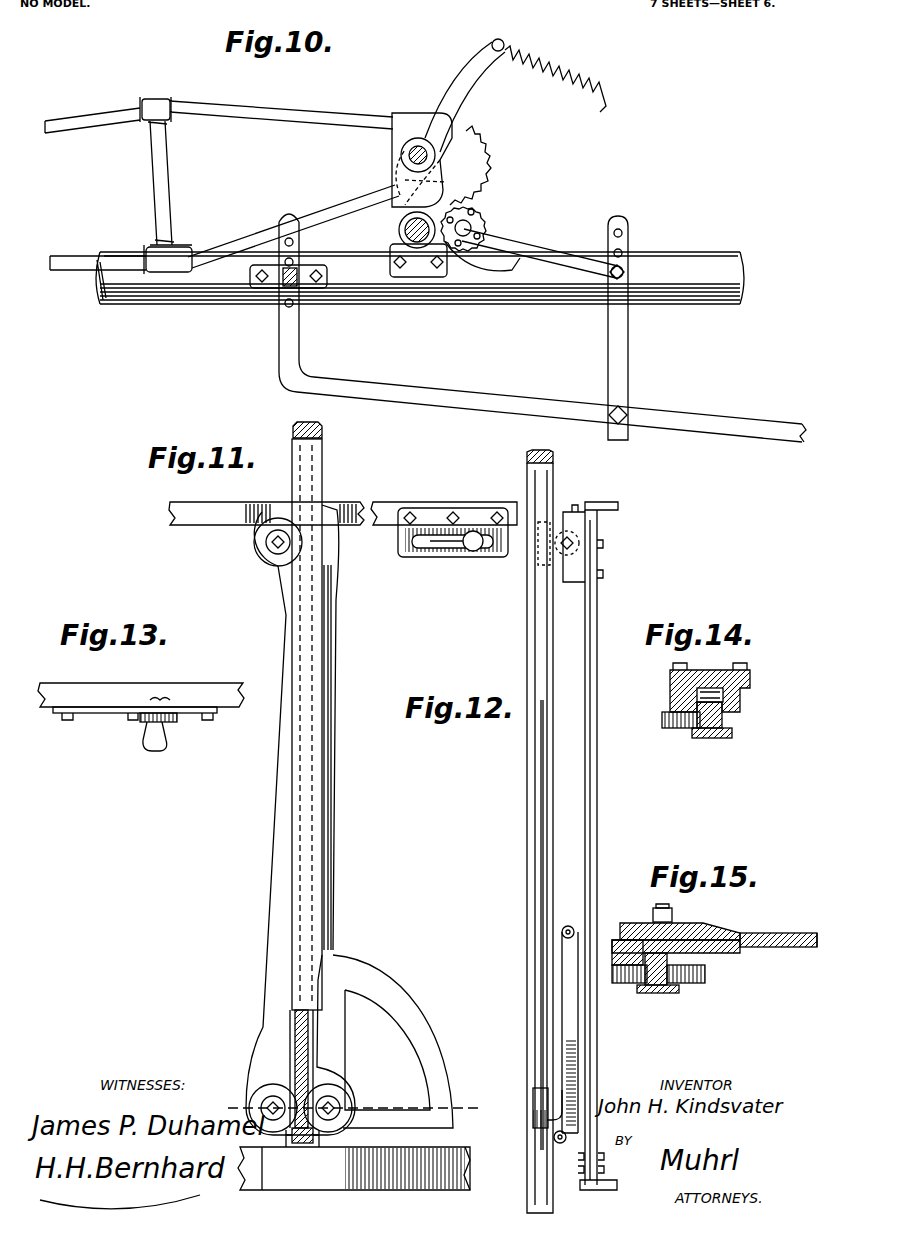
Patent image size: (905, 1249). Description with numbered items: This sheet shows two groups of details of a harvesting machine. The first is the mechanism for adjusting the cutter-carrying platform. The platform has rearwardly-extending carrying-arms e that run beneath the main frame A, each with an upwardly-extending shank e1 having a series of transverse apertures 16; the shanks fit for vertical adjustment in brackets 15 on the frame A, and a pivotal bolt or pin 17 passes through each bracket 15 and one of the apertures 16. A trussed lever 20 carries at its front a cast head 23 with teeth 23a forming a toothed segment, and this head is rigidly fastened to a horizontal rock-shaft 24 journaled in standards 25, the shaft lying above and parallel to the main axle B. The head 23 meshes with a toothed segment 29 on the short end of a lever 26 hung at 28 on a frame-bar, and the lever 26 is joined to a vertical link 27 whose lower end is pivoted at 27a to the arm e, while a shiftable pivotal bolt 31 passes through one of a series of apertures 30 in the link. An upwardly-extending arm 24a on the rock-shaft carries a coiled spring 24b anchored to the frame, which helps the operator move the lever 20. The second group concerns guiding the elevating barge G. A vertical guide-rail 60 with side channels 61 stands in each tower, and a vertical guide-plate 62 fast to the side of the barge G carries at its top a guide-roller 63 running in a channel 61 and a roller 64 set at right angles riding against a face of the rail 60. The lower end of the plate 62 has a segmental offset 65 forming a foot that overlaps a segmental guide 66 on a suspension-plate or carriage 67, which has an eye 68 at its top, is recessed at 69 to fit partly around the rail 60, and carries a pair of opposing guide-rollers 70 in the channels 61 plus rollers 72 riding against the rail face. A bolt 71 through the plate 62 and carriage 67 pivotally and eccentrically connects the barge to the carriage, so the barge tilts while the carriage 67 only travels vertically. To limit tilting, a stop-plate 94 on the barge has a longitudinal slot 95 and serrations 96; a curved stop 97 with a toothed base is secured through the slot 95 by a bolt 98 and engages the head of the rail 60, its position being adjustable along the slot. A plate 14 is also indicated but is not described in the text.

In FIG. 10, the trussed lever 20 is at (73, 123).
In FIG. 10, the transverse apertures 16 is at (293, 242).
In FIG. 10, the toothed head 23 is at (420, 116).
In FIG. 10, the teeth 23a is at (478, 152).
In FIG. 10, the rock-shaft 24 is at (410, 156).
In FIG. 10, the upwardly-extending arm 24a is at (468, 83).
In FIG. 10, the coiled spring 24b is at (578, 79).
In FIG. 10, the standards 25 is at (410, 183).
In FIG. 10, the toothed segment 29 is at (470, 213).
In FIG. 10, the fulcrum 28 is at (480, 225).
In FIG. 10, the main axle B is at (399, 232).
In FIG. 10, the levers 26 is at (528, 254).
In FIG. 10, the link 27 is at (624, 342).
In FIG. 10, the pivot 27a is at (628, 415).
In FIG. 10, the apertures 30 is at (623, 236).
In FIG. 10, the shiftable pivotal bolt 31 is at (614, 283).
In FIG. 10, the main frame A is at (664, 264).
In FIG. 10, the brackets 15 is at (305, 272).
In FIG. 11, the brackets 15 is at (356, 1108).
In FIG. 10, the pivotal bolts or pins 17 is at (273, 292).
In FIG. 10, the shank e1 is at (302, 325).
In FIG. 10, the carrying-arms e is at (479, 399).
In FIG. 11, the plate 14 is at (368, 512).
In FIG. 11, the vertical guide-plates 62 is at (281, 821).
In FIG. 12, the vertical guide-plates 62 is at (590, 1062).
In FIG. 14, the vertical guide-plates 62 is at (670, 690).
In FIG. 15, the vertical guide-plates 62 is at (701, 928).
In FIG. 11, the vertical guide-rails 60 is at (318, 457).
In FIG. 12, the vertical guide-rails 60 is at (555, 490).
In FIG. 14, the vertical guide-rails 60 is at (710, 740).
In FIG. 15, the vertical guide-rails 60 is at (663, 993).
In FIG. 11, the channels 61 is at (319, 433).
In FIG. 12, the channels 61 is at (540, 455).
In FIG. 14, the channels 61 is at (723, 718).
In FIG. 15, the channels 61 is at (645, 992).
In FIG. 11, the guide-roller 63 is at (272, 551).
In FIG. 12, the guide-roller 63 is at (548, 540).
In FIG. 14, the guide-roller 63 is at (667, 725).
In FIG. 12, the guide-roller 64 is at (560, 552).
In FIG. 14, the guide-roller 64 is at (719, 674).
In FIG. 11, the barge G is at (391, 512).
In FIG. 12, the barge G is at (604, 506).
In FIG. 13, the barge G is at (74, 690).
In FIG. 14, the barge G is at (670, 676).
In FIG. 15, the barge G is at (768, 913).
In FIG. 11, the stop-plate 94 is at (440, 517).
In FIG. 13, the stop-plate 94 is at (78, 714).
In FIG. 11, the longitudinal slot 95 is at (426, 550).
In FIG. 11, the teeth or serrations 96 is at (452, 552).
In FIG. 11, the stop 97 is at (474, 552).
In FIG. 13, the stop 97 is at (161, 739).
In FIG. 13, the bolt 98 is at (171, 701).
In FIG. 11, the segmental guide 66 is at (421, 1026).
In FIG. 12, the segmental guide 66 is at (566, 1064).
In FIG. 15, the segmental guide 66 is at (798, 949).
In FIG. 11, the suspension-plate or carriage 67 is at (292, 1040).
In FIG. 12, the suspension-plate or carriage 67 is at (568, 999).
In FIG. 15, the suspension-plate or carriage 67 is at (702, 952).
In FIG. 11, the guide-rollers 70 is at (347, 1107).
In FIG. 12, the guide-rollers 70 is at (548, 1113).
In FIG. 15, the guide-rollers 70 is at (706, 974).
In FIG. 11, the guide-rollers 72 is at (297, 1148).
In FIG. 12, the guide-rollers 72 is at (561, 1145).
In FIG. 12, the eye 68 is at (561, 933).
In FIG. 12, the segmental offset 65 is at (578, 1015).
In FIG. 15, the segmental offset 65 is at (797, 933).
In FIG. 15, the recess 69 is at (628, 940).
In FIG. 15, the bolts 71 is at (648, 924).